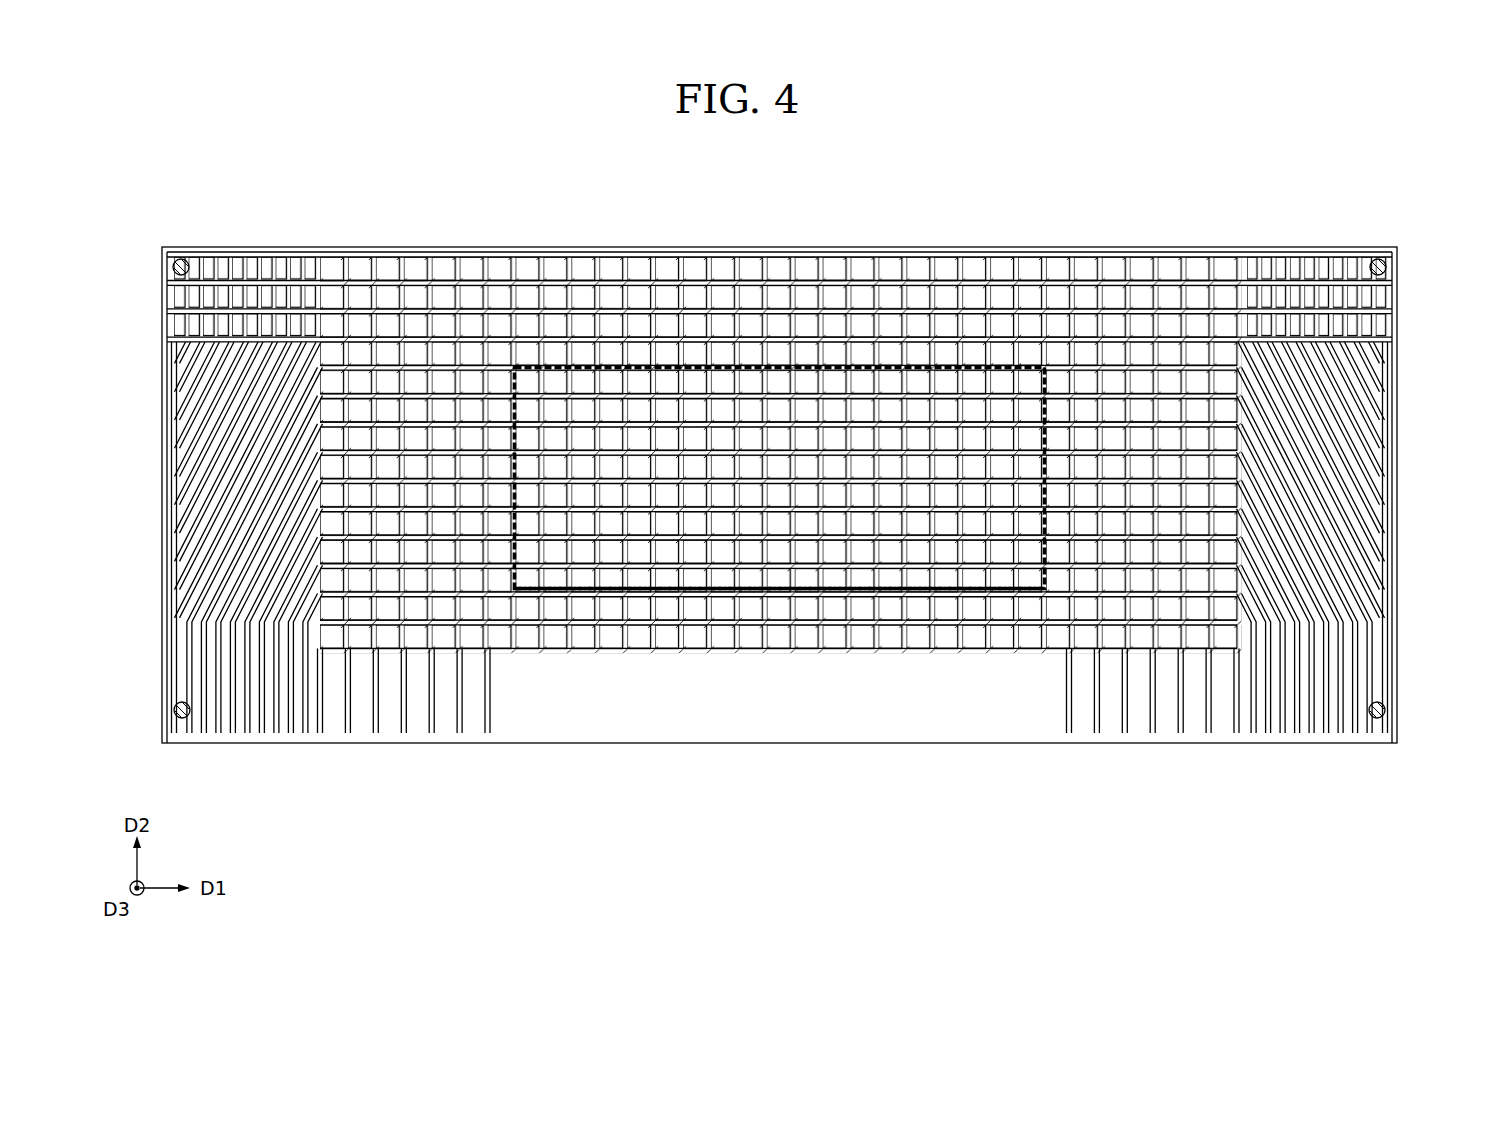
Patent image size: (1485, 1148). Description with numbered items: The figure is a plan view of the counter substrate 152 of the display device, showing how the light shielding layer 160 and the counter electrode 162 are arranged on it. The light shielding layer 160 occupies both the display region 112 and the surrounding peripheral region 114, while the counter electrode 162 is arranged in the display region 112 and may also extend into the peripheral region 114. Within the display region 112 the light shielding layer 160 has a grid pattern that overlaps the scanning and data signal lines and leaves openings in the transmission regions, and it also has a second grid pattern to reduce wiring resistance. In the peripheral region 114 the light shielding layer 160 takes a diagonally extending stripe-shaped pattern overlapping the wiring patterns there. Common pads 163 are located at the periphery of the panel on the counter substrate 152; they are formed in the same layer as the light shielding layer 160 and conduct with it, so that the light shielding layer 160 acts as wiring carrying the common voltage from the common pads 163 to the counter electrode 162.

The display region 112 is at (778, 352).
The peripheral region 114 is at (515, 215).
The counter substrate 152 is at (850, 746).
The light shielding layer 160 is at (712, 652).
The counter electrode 162 is at (604, 598).
The common pads 163 is at (1386, 250).